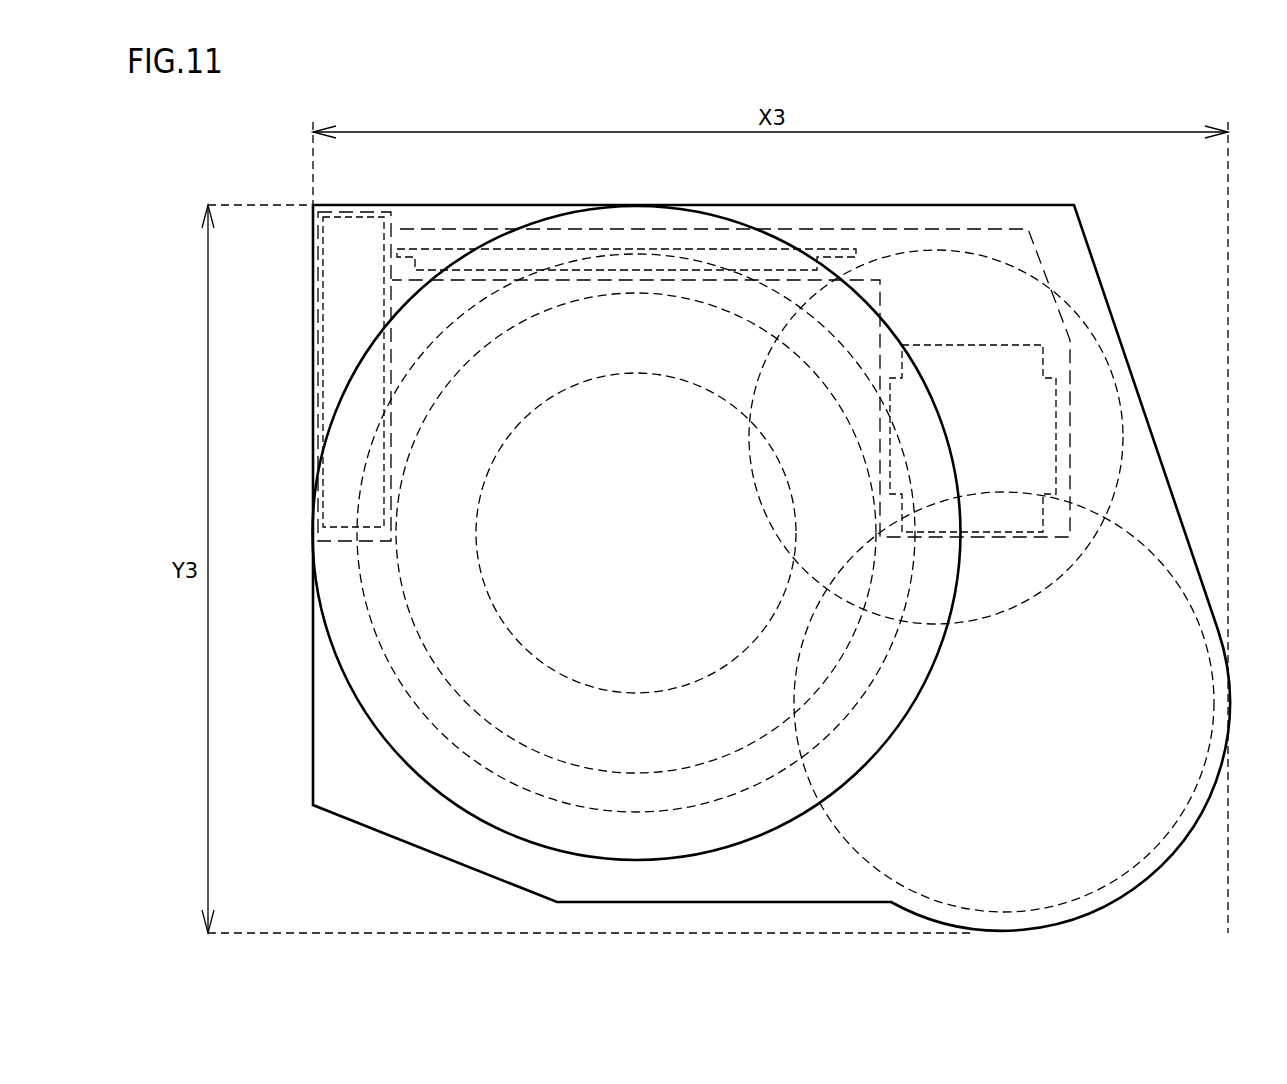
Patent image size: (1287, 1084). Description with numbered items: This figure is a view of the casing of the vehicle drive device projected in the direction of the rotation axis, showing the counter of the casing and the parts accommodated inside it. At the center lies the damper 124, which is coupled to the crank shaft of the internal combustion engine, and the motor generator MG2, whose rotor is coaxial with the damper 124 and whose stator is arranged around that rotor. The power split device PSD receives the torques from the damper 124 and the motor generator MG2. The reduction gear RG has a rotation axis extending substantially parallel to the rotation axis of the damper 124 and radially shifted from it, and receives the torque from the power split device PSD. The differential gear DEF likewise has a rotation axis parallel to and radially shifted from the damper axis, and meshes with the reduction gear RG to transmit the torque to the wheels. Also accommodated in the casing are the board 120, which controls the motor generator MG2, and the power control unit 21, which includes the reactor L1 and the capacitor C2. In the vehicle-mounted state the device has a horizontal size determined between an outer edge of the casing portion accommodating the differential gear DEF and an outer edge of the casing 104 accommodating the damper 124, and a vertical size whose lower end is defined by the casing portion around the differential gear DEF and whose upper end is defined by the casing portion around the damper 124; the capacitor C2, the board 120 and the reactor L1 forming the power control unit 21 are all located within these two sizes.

The casing 104 is at (403, 763).
The damper 124 is at (458, 750).
The motor generator MG2 is at (508, 740).
The power split device PSD is at (488, 590).
The reduction gear RG is at (937, 250).
The differential gear DEF is at (1170, 830).
The reactor L1 is at (1016, 342).
The capacitor C2 is at (345, 530).
The board 120 is at (423, 249).
The power control unit 21 is at (473, 229).